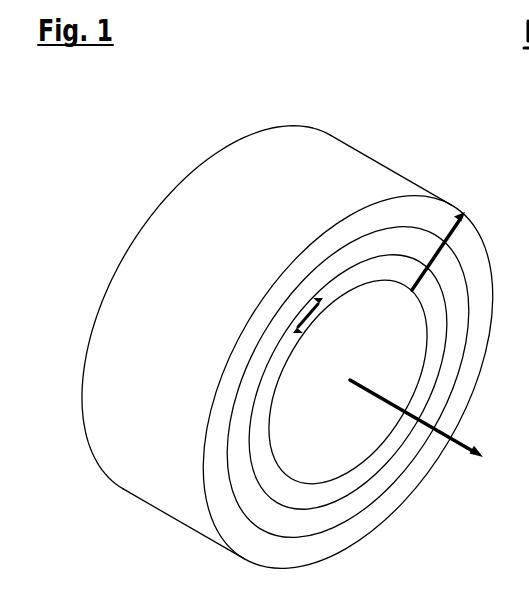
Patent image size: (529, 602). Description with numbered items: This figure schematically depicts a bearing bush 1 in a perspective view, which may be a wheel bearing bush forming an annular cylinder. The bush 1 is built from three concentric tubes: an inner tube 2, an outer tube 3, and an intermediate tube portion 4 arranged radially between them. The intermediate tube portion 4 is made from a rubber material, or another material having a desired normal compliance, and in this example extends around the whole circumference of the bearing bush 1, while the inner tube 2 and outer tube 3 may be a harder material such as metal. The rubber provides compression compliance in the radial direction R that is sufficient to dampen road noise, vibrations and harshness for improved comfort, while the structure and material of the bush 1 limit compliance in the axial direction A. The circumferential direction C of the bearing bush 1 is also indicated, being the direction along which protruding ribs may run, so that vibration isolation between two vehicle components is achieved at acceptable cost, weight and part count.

The bush 1 is at (122, 123).
The inner tube 2 is at (428, 365).
The outer tube 3 is at (331, 142).
The intermediate tube portion 4 is at (358, 502).
The radial direction R is at (450, 228).
The circumferential direction C is at (305, 319).
The axial direction A is at (470, 440).